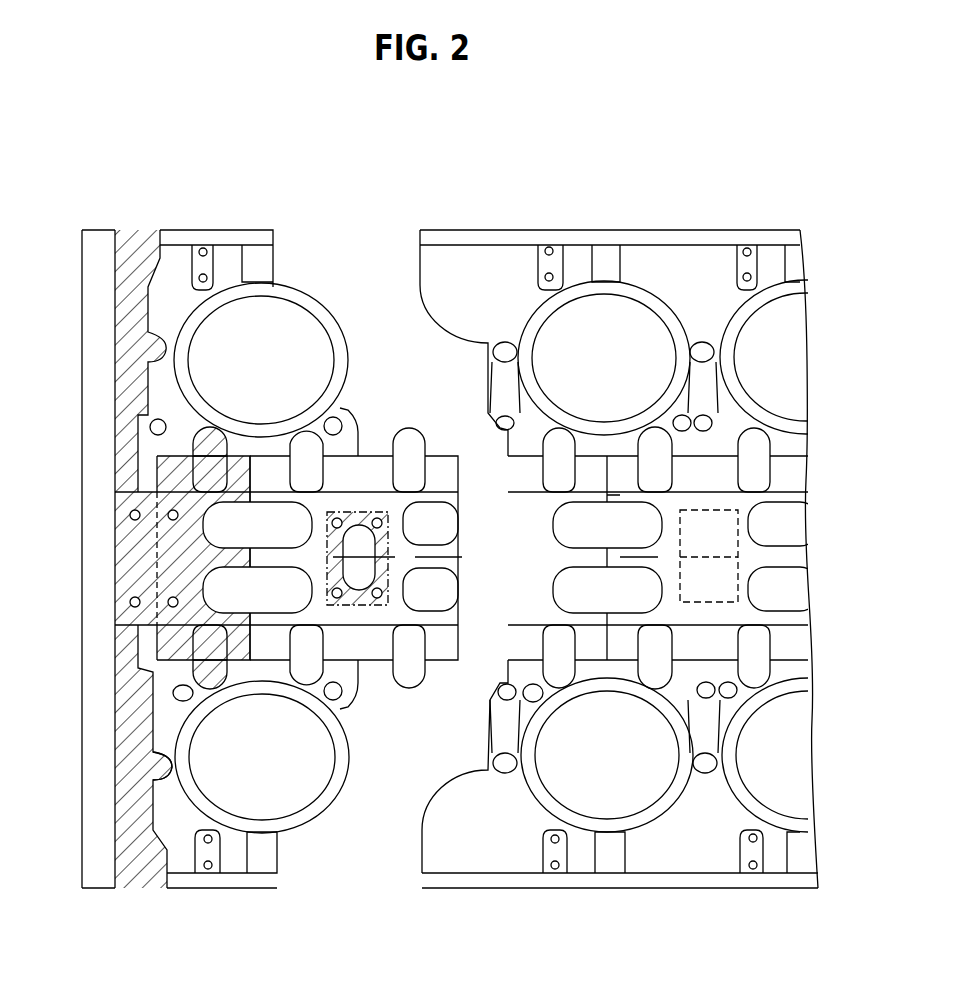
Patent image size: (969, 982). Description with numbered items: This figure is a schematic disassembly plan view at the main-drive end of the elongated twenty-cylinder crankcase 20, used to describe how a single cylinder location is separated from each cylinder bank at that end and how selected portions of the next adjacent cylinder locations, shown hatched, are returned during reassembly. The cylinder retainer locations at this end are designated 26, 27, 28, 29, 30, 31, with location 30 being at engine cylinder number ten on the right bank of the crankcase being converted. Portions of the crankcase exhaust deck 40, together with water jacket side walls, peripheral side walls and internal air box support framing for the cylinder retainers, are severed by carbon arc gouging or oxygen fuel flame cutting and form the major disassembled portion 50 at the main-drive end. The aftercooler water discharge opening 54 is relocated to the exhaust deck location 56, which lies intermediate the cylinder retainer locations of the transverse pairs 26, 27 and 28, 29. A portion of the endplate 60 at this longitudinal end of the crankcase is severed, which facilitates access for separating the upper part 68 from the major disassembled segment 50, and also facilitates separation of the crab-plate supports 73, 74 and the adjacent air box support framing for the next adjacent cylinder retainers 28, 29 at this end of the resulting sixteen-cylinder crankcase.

The twenty-cylinder crankcase 20 is at (457, 207).
The cylinder retainer location 26 is at (749, 769).
The cylinder retainer location 27 is at (754, 371).
The cylinder retainer location 28 is at (591, 769).
The cylinder retainer location 29 is at (588, 372).
The cylinder retainer location 30 is at (246, 771).
The cylinder retainer location 31 is at (245, 373).
The crankcase exhaust deck 40 is at (618, 495).
The disassembled portion 50 is at (205, 193).
The aftercooler water discharge opening 54 is at (356, 507).
The exhaust deck location 56 is at (740, 520).
The endplate 60 is at (99, 237).
The upper part 68 is at (193, 558).
The crab-plate support 73 is at (127, 350).
The crab-plate support 74 is at (130, 757).